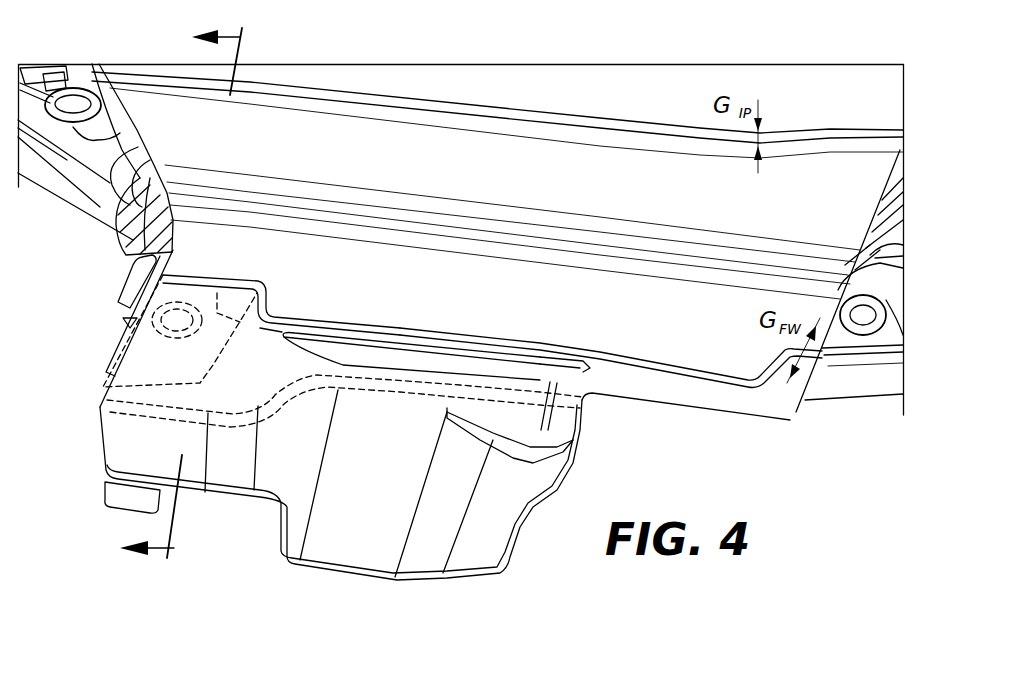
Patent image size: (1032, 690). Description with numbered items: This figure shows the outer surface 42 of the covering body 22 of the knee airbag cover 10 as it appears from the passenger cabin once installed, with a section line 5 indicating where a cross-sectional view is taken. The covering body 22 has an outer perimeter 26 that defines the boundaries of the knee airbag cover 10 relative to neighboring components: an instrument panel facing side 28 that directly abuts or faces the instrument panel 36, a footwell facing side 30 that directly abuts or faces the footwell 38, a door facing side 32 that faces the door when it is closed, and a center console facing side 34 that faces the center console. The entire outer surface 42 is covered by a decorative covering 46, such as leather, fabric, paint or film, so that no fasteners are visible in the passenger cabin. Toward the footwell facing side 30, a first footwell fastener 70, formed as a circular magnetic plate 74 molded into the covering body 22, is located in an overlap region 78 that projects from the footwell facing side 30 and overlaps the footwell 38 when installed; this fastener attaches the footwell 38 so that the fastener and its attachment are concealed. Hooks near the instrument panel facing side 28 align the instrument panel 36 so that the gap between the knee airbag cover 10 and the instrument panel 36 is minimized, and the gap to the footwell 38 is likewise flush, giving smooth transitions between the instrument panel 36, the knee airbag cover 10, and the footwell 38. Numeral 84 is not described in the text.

The section line 5- 5 is at (194, 295).
The knee airbag cover 10 is at (153, 110).
The covering body 22 is at (84, 87).
The outer perimeter 26 is at (583, 118).
The instrument panel facing side 28 is at (659, 127).
The footwell facing side 30 is at (699, 371).
The door facing side 32 is at (122, 178).
The center console facing side 34 is at (830, 352).
The instrument panel 36 is at (434, 77).
The footwell 38 is at (122, 448).
The outer surface 42 is at (850, 170).
The decorative covering 46 is at (880, 173).
The first footwell fastener 70 is at (178, 313).
The circular magnetic plate 74 is at (190, 318).
The overlap region 78 is at (123, 265).
The fastener hole 84 is at (182, 333).